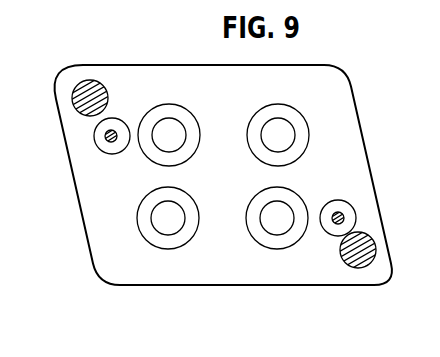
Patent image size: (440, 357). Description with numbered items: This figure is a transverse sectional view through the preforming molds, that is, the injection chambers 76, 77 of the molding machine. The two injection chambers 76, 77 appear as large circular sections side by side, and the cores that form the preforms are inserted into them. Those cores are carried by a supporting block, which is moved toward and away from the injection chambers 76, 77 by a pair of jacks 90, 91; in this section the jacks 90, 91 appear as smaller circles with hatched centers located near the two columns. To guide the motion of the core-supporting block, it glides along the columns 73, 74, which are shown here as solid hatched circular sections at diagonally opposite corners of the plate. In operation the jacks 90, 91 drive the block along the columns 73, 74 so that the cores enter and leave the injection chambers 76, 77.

The column 73 is at (363, 248).
The column 74 is at (88, 80).
The injection chamber 76 is at (176, 132).
The injection chamber 77 is at (275, 134).
The jack 90 is at (340, 212).
The jack 91 is at (114, 130).